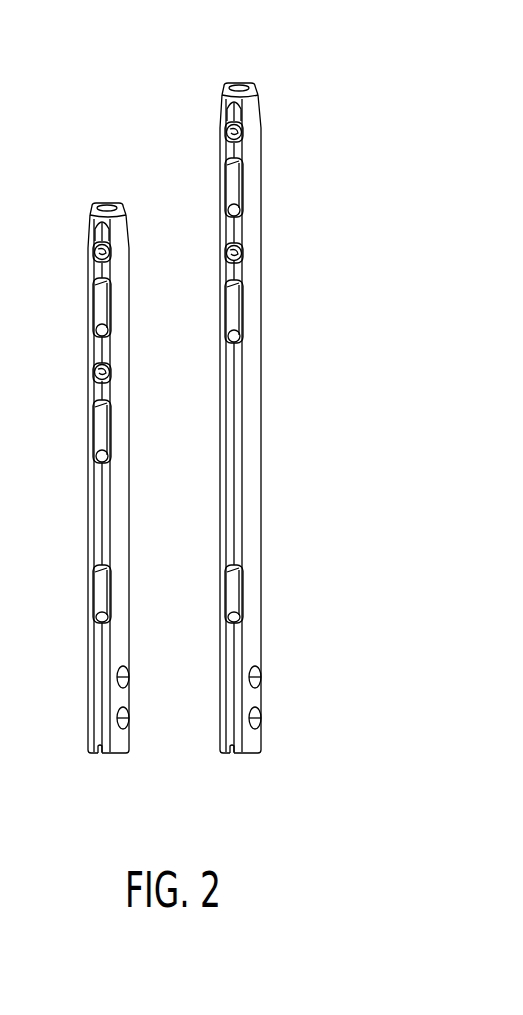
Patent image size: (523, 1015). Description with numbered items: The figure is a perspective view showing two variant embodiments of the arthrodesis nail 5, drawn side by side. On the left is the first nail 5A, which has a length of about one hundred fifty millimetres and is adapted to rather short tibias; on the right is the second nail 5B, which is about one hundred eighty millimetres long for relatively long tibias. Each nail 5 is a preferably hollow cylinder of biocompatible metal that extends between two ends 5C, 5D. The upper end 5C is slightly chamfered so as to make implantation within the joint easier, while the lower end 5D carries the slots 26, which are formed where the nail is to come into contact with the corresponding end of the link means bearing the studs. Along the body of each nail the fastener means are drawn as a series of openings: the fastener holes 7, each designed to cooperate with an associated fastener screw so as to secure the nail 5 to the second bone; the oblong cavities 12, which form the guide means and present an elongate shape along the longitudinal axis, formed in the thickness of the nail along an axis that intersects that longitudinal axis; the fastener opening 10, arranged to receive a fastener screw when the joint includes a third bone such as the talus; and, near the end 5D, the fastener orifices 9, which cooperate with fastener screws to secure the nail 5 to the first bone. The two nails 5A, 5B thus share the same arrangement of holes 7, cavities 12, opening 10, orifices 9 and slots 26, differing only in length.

The arthrodesis nail 5 is at (150, 110).
The first nail 5A is at (86, 495).
The second nail 5B is at (268, 108).
The end 5C is at (92, 200).
The end 5D is at (94, 755).
The fastener hole 7 is at (96, 251).
The fastener orifice 9 is at (126, 678).
The fastener opening 10 is at (98, 593).
The oblong cavity 12 is at (99, 310).
The slot 26 is at (101, 755).